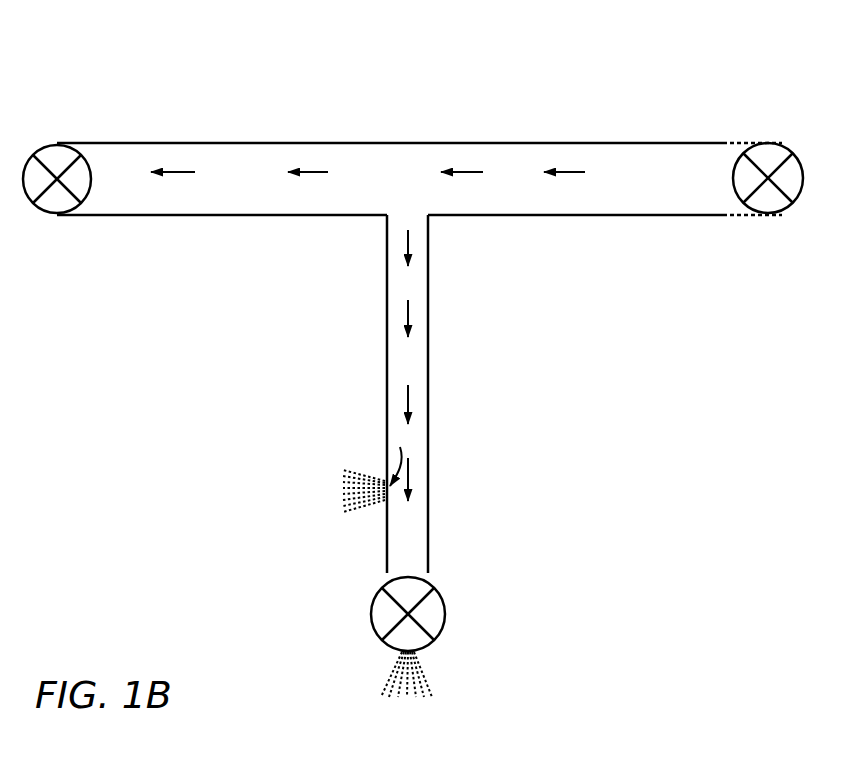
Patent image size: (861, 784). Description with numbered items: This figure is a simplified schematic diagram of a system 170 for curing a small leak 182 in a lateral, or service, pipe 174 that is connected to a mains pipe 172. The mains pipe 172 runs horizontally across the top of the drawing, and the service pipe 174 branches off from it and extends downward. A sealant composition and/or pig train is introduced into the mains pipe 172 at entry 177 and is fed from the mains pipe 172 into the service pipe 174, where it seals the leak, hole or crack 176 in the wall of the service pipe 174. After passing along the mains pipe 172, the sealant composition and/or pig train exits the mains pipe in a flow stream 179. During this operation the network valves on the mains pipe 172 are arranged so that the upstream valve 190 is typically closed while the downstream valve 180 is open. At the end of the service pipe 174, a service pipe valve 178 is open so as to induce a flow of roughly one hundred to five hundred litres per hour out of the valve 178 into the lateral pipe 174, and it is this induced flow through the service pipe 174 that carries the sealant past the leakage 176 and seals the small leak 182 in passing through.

The system 170 is at (95, 72).
The mains pipe 172 is at (622, 215).
The lateral (service) pipe 174 is at (428, 296).
The leak/hole/crack 176 is at (391, 485).
The sealant composition and/or pig train entry 177 is at (586, 173).
The service pipe valve 178 is at (445, 620).
The flow stream 179 is at (151, 173).
The downstream valve 180 is at (38, 212).
The small leak 182 is at (333, 491).
The upstream valve 190 is at (793, 156).